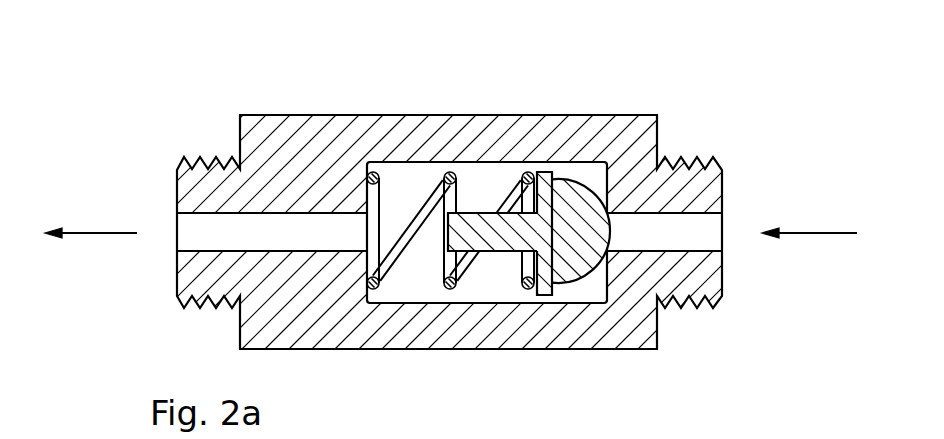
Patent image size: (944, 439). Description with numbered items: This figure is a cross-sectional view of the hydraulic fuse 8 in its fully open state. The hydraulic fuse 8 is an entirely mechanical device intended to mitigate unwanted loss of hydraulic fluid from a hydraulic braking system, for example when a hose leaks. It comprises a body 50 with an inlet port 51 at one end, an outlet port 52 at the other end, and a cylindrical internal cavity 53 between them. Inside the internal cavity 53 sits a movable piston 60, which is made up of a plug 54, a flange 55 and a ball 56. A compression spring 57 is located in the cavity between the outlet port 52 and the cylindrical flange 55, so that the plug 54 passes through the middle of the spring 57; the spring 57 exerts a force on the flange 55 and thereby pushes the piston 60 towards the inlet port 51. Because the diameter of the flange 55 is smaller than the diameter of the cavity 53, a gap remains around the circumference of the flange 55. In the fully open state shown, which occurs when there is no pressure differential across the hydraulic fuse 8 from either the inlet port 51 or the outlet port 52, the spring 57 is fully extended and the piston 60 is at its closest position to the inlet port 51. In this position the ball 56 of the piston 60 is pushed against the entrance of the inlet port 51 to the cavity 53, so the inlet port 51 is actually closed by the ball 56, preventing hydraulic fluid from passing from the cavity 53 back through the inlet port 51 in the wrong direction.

The hydraulic fuse 8 is at (486, 78).
The body 50 is at (630, 327).
The inlet port 51 is at (722, 225).
The outlet port 52 is at (177, 230).
The cylindrical internal cavity 53 is at (415, 288).
The plug 54 is at (499, 241).
The flange 55 is at (546, 174).
The ball 56 is at (587, 207).
The compression spring 57 is at (432, 203).
The movable piston 60 is at (500, 168).